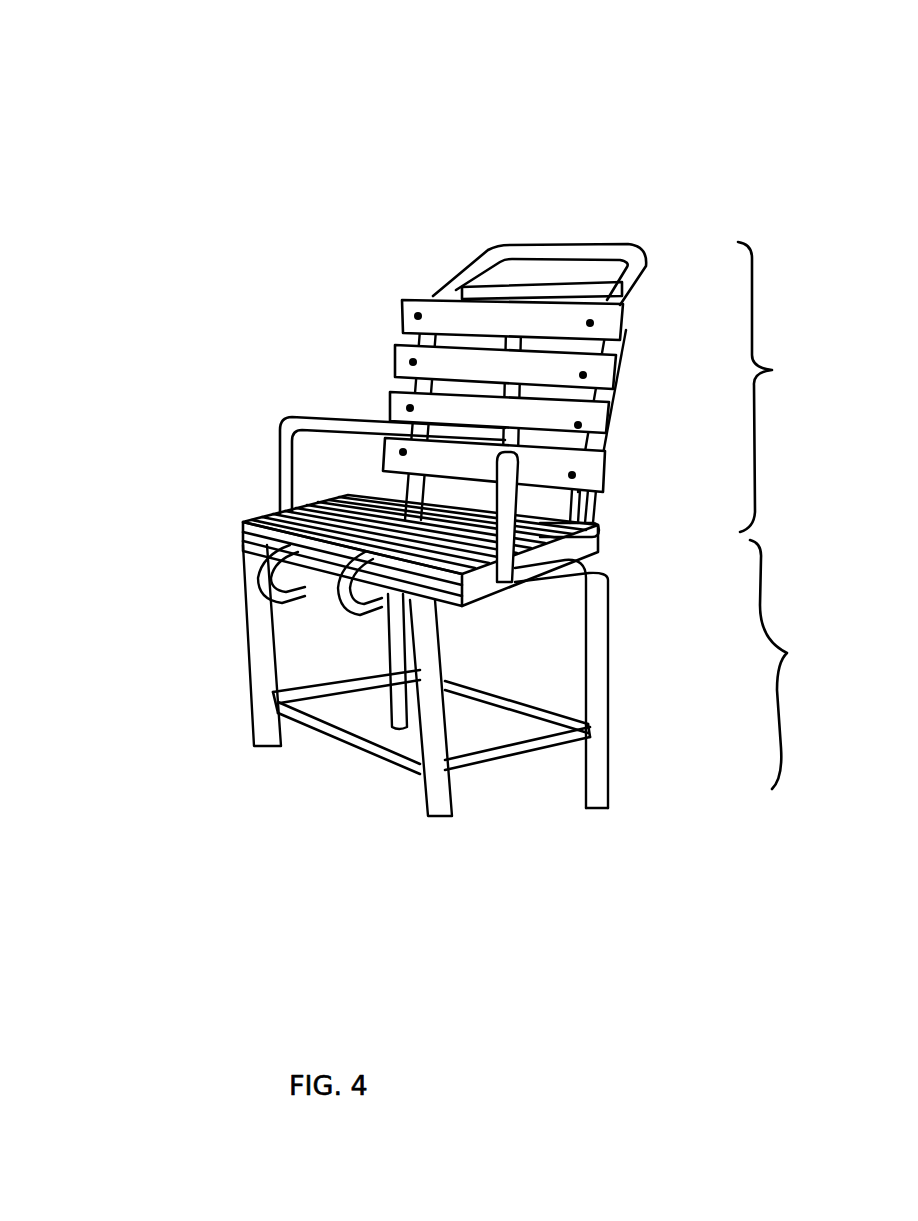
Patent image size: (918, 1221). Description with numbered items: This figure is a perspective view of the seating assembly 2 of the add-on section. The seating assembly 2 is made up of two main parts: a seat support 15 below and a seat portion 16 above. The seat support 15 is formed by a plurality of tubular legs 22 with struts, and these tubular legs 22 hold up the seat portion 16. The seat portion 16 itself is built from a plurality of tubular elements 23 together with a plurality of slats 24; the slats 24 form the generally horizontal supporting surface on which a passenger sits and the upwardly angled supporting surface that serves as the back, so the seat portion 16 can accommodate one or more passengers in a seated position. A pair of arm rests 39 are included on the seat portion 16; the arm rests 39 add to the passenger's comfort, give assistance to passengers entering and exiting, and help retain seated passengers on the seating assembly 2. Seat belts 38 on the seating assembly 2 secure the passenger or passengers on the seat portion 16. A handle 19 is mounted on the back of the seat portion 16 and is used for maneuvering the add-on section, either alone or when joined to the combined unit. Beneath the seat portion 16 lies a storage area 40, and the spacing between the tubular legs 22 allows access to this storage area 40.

The seating assembly 2 is at (426, 440).
The seat support 15 is at (426, 662).
The seat portion 16 is at (570, 330).
The handle 19 is at (613, 248).
The tubular legs 22 is at (392, 637).
The tubular elements 23 is at (417, 482).
The slats 24 is at (410, 310).
The seat belts 38 is at (265, 567).
The arm rests 39 is at (425, 430).
The storage area 40 is at (473, 671).